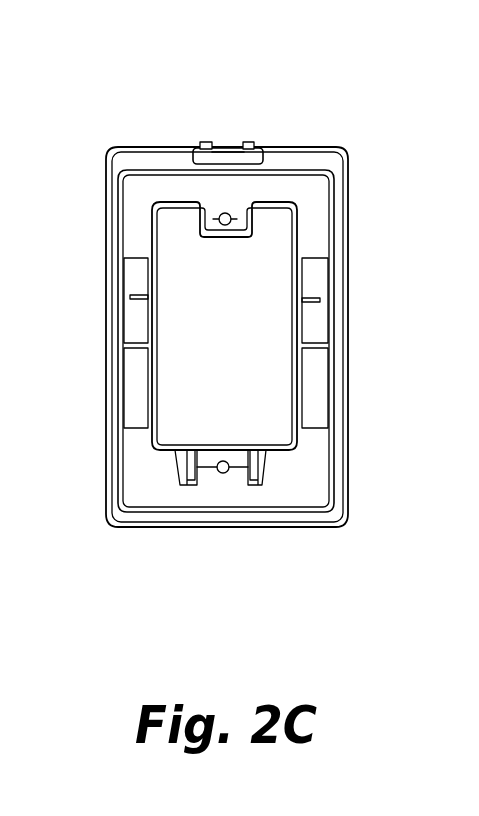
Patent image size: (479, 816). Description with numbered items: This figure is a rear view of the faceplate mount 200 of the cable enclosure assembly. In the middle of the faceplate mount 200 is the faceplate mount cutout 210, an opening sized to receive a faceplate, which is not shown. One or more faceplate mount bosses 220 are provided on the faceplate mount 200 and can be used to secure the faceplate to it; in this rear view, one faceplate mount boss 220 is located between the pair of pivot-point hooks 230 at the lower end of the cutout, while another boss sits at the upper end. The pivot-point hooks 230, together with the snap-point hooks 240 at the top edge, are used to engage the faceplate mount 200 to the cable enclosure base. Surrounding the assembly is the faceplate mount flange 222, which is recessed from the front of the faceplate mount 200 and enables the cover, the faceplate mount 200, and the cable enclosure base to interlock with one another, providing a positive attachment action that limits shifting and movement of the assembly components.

The faceplate mount 200 is at (134, 114).
The faceplate mount cutout 210 is at (270, 333).
The faceplate mount boss 220 is at (230, 215).
The faceplate mount flange 222 is at (348, 433).
The pivot-point hook 230 is at (250, 486).
The snap-point hook 240 is at (204, 142).